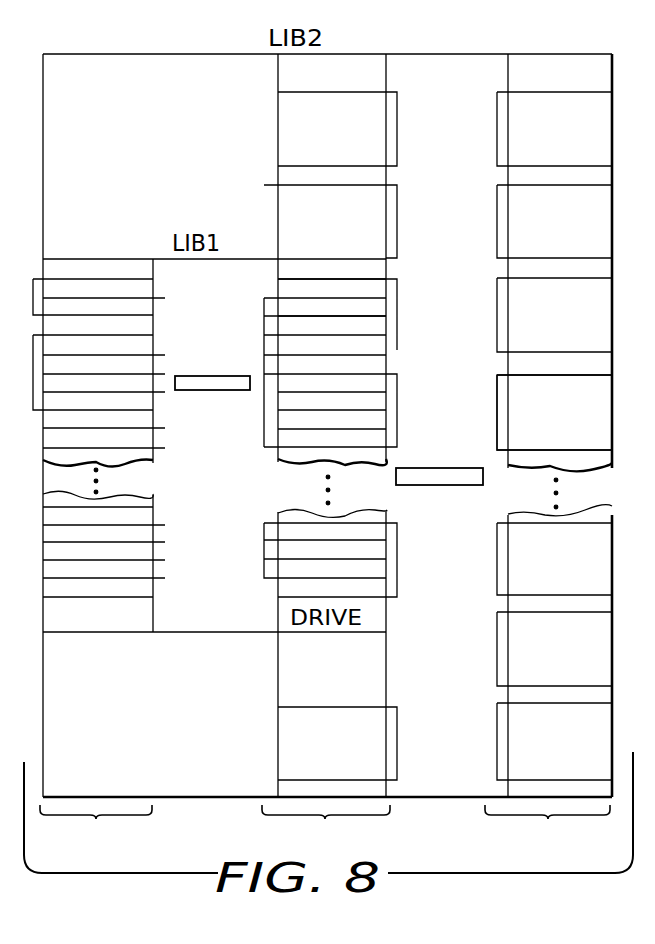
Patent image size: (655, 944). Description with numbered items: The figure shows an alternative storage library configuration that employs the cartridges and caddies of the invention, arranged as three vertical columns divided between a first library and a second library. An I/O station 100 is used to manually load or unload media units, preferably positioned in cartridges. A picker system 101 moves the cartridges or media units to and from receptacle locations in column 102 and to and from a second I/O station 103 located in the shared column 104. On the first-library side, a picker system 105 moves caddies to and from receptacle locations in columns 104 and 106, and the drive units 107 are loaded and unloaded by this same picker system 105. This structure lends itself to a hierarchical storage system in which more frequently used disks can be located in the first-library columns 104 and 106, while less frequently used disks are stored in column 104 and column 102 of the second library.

The I/O station 100 is at (578, 486).
The picker system 101 is at (435, 486).
The column 102 is at (548, 820).
The I/O station 103 is at (290, 472).
The column 104 is at (325, 820).
The picker system 105 is at (212, 391).
The column 106 is at (96, 820).
The drive units 107 is at (70, 633).